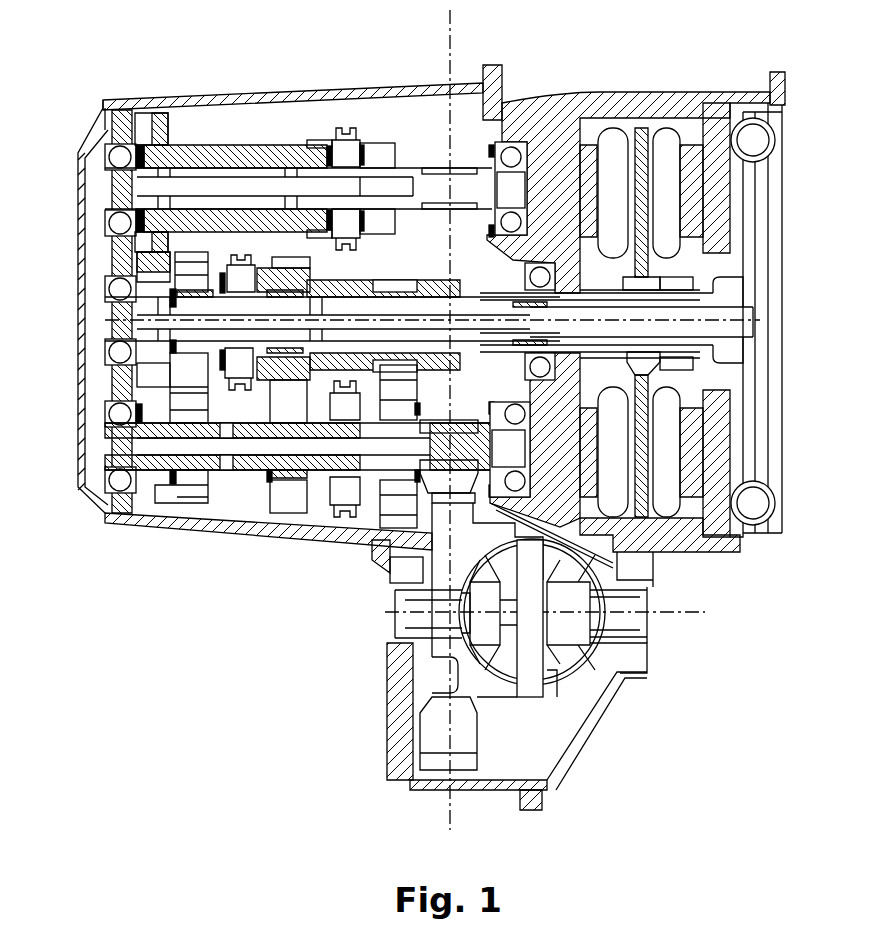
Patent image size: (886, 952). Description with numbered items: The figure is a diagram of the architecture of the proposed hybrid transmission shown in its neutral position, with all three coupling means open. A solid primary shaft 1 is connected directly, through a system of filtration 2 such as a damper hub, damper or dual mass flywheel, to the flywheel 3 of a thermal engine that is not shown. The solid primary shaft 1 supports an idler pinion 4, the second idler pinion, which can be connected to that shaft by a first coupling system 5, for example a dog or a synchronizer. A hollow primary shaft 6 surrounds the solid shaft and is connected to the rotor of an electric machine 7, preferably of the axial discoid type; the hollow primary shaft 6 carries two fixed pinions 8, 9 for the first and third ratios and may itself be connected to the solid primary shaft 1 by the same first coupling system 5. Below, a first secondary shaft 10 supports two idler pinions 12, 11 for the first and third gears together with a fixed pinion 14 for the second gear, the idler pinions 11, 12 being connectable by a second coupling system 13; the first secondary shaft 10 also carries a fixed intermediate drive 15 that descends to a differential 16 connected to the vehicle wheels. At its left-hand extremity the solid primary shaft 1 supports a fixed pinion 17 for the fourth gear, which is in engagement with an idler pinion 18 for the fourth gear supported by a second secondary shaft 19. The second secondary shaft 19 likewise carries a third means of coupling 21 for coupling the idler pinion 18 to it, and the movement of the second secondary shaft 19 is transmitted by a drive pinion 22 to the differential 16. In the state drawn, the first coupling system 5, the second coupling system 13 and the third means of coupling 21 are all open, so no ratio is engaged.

The solid primary shaft 1 is at (737, 277).
The system of filtration 2 is at (748, 432).
The flywheel 3 is at (777, 465).
The idler pinion 4 is at (188, 370).
The first coupling system 5 is at (240, 258).
The hollow primary shaft 6 is at (327, 280).
The electric machine 7 is at (668, 200).
The fixed pinion 8 is at (397, 290).
The fixed pinion 9 is at (296, 268).
The first secondary shaft 10 is at (223, 480).
The idler pinion 11 is at (277, 492).
The idler pinion 12 is at (383, 508).
The second coupling system 13 is at (345, 508).
The fixed pinion 14 is at (180, 485).
The fixed intermediate drive 15 is at (433, 425).
The differential 16 is at (600, 672).
The fixed pinion 17 is at (148, 277).
The idler pinion 18 is at (152, 125).
The second secondary shaft 19 is at (390, 150).
The third means of coupling 21 is at (345, 128).
The drive pinion 22 is at (438, 170).